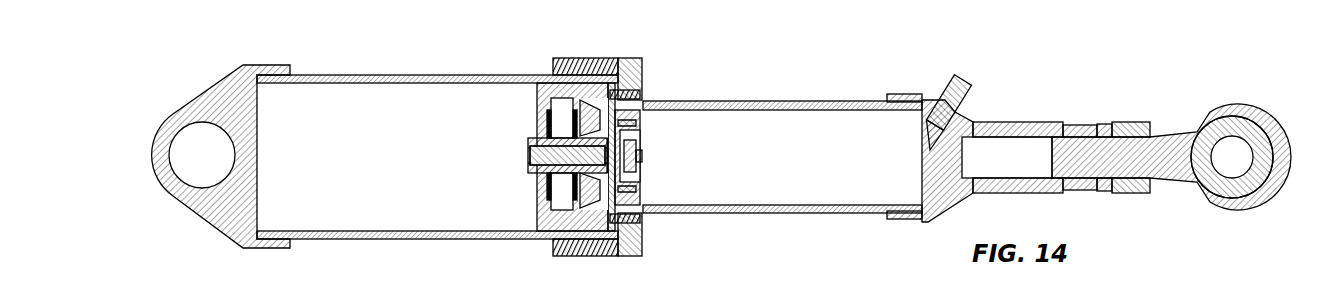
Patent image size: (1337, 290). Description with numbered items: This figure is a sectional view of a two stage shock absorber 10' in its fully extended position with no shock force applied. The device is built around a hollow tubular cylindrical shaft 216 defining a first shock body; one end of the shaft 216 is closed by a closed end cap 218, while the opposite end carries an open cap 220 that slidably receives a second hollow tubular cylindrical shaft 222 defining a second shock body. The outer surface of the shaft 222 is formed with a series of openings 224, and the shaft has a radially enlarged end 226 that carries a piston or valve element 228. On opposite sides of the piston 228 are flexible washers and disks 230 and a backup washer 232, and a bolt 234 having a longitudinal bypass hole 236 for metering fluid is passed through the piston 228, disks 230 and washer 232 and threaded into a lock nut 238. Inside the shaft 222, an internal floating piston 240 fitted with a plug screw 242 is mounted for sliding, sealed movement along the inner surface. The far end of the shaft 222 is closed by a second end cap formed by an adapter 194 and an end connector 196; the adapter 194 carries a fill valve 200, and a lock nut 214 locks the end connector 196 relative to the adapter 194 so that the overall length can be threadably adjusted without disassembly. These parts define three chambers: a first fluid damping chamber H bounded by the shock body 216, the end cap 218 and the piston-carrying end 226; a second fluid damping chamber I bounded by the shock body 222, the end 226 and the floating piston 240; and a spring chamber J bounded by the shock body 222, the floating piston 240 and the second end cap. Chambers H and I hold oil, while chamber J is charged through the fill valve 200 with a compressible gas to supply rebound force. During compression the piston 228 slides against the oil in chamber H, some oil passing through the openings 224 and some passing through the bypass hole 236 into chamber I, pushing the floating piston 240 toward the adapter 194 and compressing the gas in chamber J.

The two stage shock absorber 10' is at (776, 29).
The adapter 194 is at (1005, 122).
The end connector 196 is at (1230, 104).
The fill valve 200 is at (950, 86).
The lock nut 214 is at (1133, 122).
The hollow tubular cylindrical shaft 216 is at (357, 74).
The closed end cap 218 is at (215, 103).
The open cap 220 is at (632, 62).
The hollow tubular cylindrical shaft 222 is at (787, 98).
The openings 224 is at (590, 66).
The radially enlarged end 226 is at (537, 224).
The piston 228 is at (532, 112).
The flexible washers and disks 230 is at (538, 200).
The backup washer 232 is at (618, 183).
The bolt 234 is at (530, 172).
The bypass hole 236 is at (533, 157).
The lock nut 238 is at (640, 103).
The internal floating piston 240 is at (620, 128).
The plug screw 242 is at (640, 167).
The first fluid damping chamber H is at (310, 103).
The second fluid damping chamber I is at (592, 112).
The spring chamber J is at (863, 132).